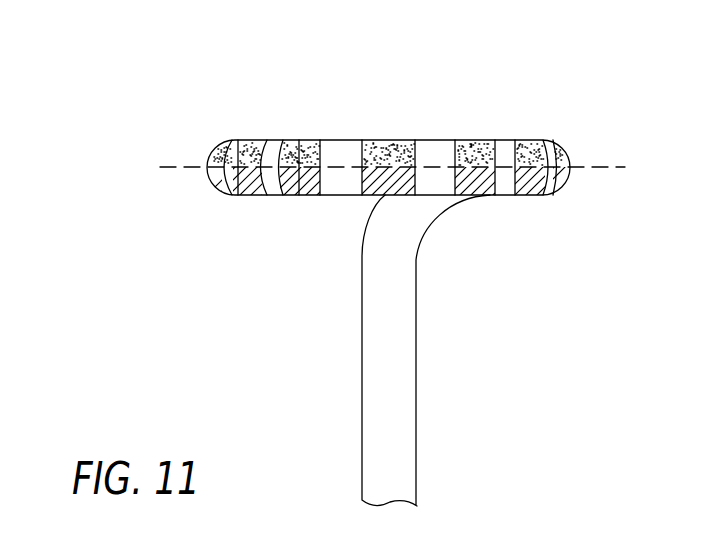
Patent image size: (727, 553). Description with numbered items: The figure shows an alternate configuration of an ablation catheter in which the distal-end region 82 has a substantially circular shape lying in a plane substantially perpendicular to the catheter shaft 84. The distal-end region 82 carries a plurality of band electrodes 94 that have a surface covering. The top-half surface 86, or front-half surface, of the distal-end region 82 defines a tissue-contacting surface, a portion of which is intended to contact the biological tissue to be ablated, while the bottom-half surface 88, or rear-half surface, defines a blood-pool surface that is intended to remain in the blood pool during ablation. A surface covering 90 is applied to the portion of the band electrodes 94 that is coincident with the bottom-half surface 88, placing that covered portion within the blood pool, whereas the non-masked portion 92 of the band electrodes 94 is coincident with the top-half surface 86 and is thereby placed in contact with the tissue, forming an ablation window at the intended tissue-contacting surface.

The distal-end region 82 is at (367, 170).
The catheter shaft 84 is at (337, 420).
The top-half surface 86 is at (543, 127).
The bottom-half surface 88 is at (543, 208).
The surface covering 90 is at (300, 195).
The non-masked portion 92 is at (299, 140).
The band electrodes 94 is at (386, 139).